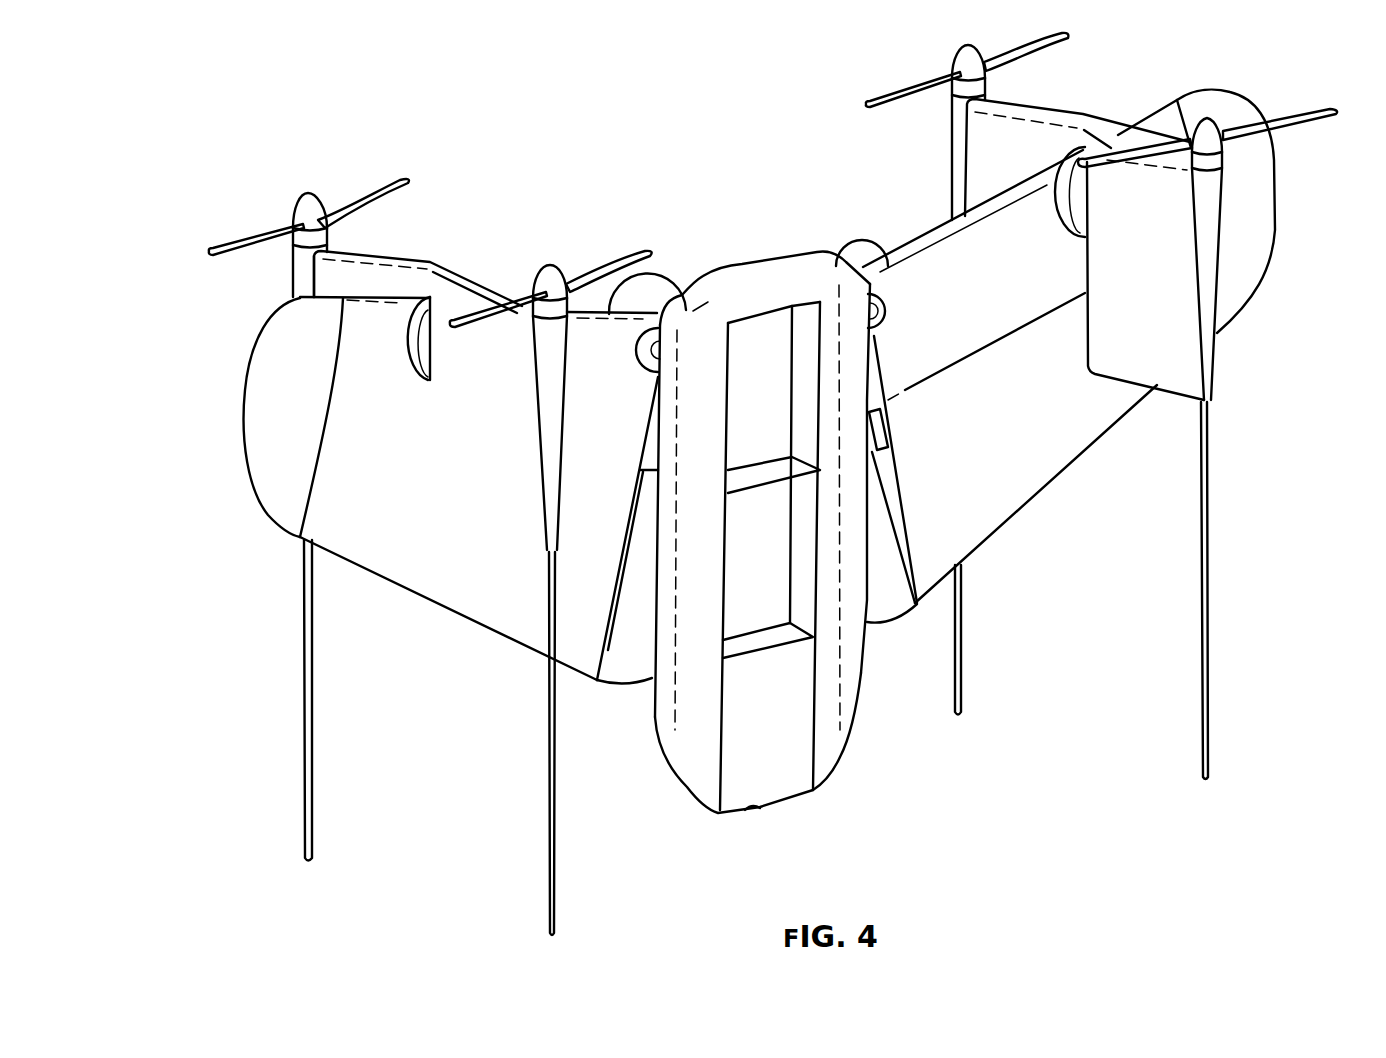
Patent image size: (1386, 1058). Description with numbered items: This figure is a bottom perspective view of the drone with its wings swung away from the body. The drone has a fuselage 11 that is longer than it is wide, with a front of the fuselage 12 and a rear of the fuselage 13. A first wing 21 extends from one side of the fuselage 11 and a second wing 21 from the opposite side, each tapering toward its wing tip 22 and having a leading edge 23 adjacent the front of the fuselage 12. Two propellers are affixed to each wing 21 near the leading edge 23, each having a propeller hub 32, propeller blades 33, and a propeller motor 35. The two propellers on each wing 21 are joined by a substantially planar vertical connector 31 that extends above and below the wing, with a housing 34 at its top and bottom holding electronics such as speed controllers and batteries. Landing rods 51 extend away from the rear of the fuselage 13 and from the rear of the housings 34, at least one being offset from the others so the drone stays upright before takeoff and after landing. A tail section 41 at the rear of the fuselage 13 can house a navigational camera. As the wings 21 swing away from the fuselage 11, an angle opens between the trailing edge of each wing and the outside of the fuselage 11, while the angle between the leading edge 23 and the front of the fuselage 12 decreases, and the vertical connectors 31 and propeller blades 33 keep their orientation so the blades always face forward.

The fuselage 11 is at (790, 528).
The front of the fuselage 12 is at (767, 260).
The rear of the fuselage 13 is at (795, 804).
The wing 21 is at (945, 262).
The wing tip 22 is at (245, 370).
The leading edge 23 is at (903, 250).
The vertical connector 31 is at (470, 280).
The propeller hub 32 is at (312, 190).
The propeller blades 33 is at (389, 177).
The housing 34 is at (300, 277).
The propeller motor 35 is at (317, 233).
The tail section 41 is at (752, 811).
The landing rod 51 is at (305, 780).